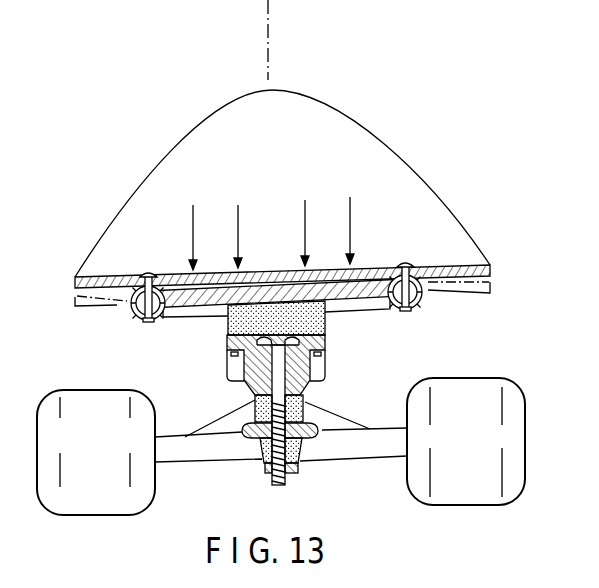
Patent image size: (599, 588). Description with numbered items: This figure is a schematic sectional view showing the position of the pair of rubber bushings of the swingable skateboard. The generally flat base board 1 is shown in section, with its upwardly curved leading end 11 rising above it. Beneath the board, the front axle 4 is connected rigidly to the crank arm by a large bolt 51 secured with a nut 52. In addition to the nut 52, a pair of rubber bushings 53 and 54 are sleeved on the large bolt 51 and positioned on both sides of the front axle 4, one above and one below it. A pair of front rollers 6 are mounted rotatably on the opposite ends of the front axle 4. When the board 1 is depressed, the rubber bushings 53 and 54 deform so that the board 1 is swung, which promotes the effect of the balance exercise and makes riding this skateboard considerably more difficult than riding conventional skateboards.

The base board 1 is at (492, 273).
The leading end 11 is at (385, 168).
The front axle 4 is at (177, 457).
The front rollers 6 is at (418, 483).
The large bolt 51 is at (280, 386).
The nut 52 is at (262, 471).
The rubber bushing 53 is at (305, 412).
The rubber bushing 54 is at (305, 448).